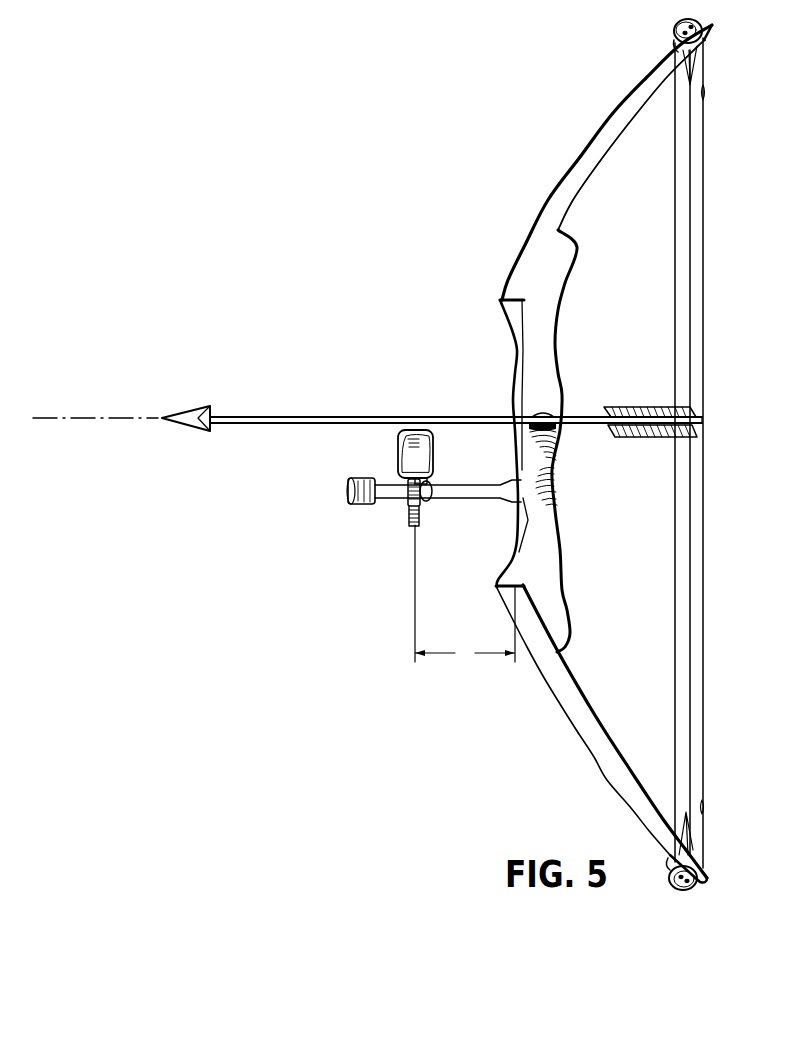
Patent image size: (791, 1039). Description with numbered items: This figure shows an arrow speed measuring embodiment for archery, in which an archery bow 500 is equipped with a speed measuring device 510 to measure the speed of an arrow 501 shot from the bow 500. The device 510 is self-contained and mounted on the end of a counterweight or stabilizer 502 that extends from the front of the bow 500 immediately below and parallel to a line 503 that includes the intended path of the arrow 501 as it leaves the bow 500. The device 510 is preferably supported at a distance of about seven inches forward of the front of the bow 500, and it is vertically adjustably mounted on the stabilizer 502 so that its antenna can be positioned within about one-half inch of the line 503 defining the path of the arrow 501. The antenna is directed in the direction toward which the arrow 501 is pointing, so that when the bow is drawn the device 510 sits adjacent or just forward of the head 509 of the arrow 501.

The archery bow 500 is at (506, 283).
The arrow 501 is at (358, 416).
The stabilizer 502 is at (383, 500).
The line 503 is at (130, 416).
The head of the arrow 509 is at (200, 408).
The speed measuring device 510 is at (385, 459).